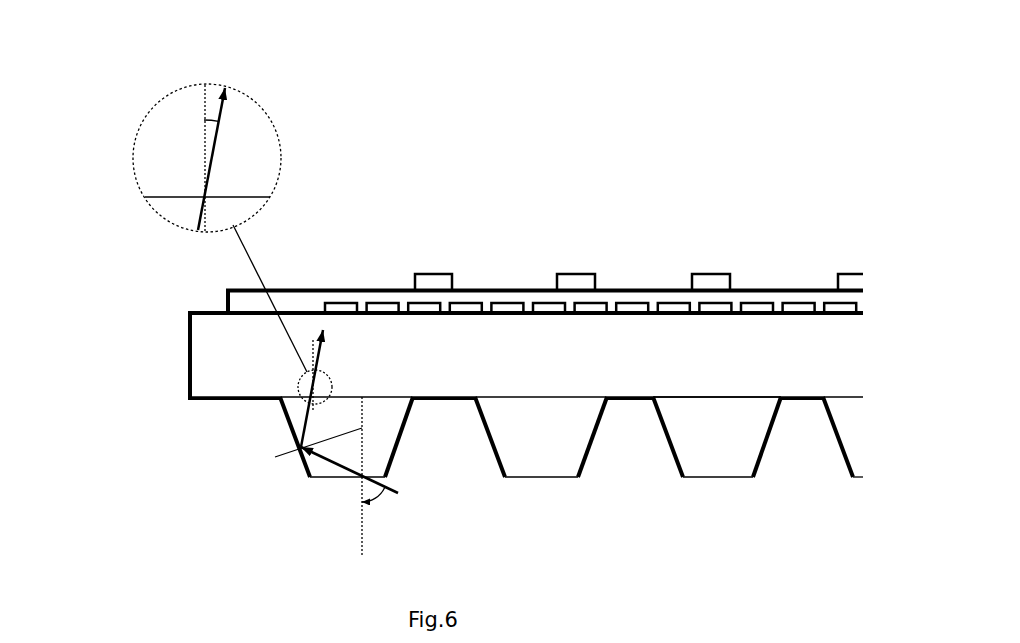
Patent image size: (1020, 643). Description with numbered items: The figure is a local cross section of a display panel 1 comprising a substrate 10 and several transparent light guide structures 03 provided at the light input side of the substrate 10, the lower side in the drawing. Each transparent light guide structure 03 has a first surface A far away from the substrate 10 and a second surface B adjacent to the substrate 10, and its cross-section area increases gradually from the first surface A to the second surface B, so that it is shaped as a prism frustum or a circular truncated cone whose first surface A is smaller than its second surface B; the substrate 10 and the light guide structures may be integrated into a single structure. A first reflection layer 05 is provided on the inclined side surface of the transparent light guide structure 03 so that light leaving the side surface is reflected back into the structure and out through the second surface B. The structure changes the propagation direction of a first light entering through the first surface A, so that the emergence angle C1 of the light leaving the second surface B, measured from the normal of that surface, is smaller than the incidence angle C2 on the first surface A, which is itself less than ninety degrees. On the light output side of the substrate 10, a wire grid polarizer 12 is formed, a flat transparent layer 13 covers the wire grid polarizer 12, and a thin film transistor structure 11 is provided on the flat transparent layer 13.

The display panel 1 is at (519, 130).
The substrate 10 is at (223, 350).
The thin film transistor structure 11 is at (428, 282).
The wire grid polarizer 12 is at (628, 308).
The flat transparent layer 13 is at (495, 292).
The transparent light guide structure 03 is at (531, 452).
The first reflection layer 05 is at (288, 427).
The first surface A is at (715, 480).
The second surface B is at (711, 401).
The emergence angle C1 is at (210, 113).
The incidence angle C2 is at (336, 477).